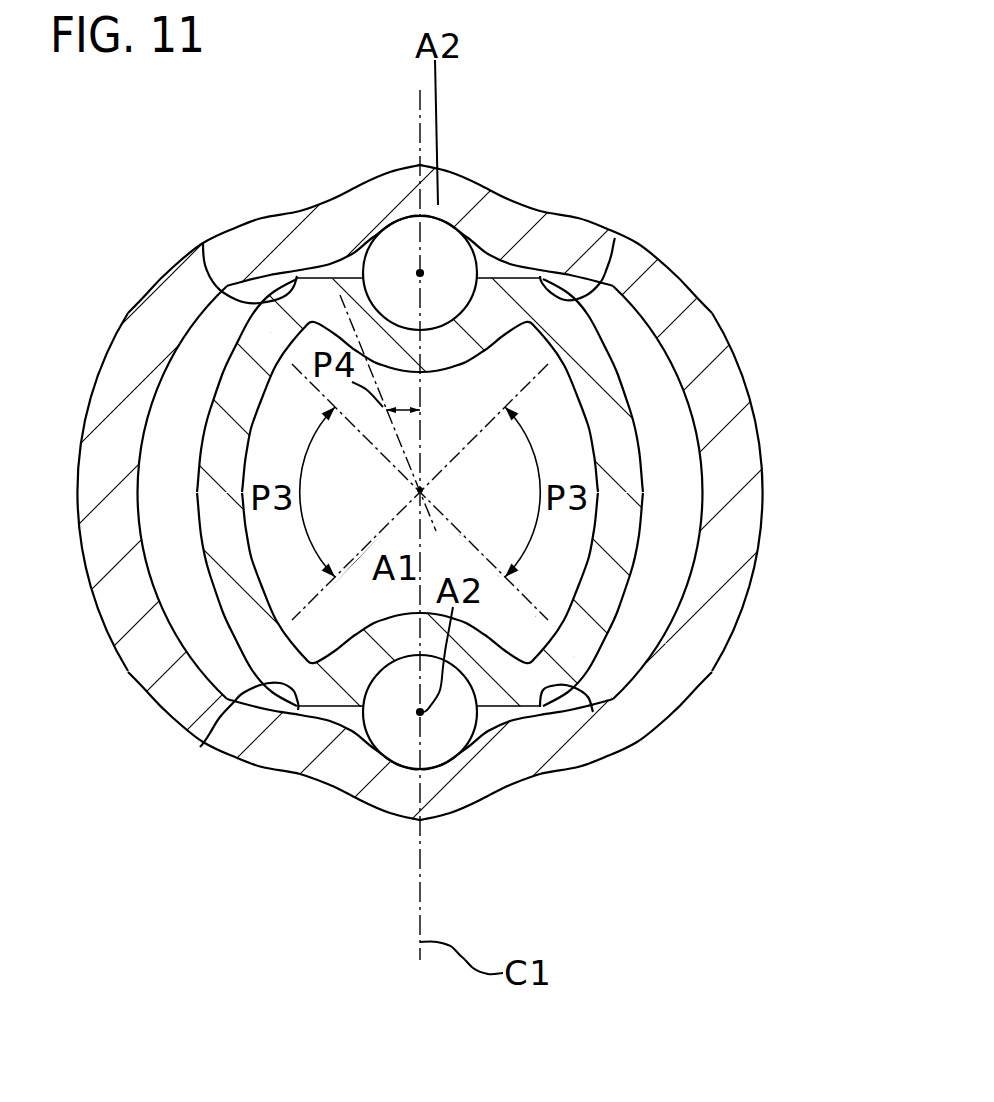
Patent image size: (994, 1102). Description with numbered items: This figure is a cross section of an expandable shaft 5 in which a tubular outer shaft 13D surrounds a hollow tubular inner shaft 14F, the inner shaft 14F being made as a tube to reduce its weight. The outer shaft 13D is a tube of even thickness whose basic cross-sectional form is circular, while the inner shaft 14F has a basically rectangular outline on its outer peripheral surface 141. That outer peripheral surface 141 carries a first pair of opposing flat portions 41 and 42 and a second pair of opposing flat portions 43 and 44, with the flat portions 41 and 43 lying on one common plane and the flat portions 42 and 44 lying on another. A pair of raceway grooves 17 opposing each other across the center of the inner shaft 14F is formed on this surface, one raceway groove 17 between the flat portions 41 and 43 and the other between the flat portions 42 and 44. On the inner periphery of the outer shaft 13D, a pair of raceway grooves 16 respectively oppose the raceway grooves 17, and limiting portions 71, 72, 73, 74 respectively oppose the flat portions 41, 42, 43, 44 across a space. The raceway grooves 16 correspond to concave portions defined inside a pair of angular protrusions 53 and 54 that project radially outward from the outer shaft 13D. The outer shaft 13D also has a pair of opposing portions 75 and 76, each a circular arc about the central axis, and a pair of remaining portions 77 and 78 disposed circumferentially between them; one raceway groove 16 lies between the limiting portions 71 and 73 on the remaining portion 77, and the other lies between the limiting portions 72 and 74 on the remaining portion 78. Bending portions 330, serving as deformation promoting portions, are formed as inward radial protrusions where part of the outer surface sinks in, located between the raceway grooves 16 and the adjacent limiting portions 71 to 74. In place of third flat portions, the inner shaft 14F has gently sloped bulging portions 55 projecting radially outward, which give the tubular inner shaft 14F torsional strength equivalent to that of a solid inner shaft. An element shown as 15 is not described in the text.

The vibration isolating bushing 5 is at (690, 132).
The outer shaft 13D is at (725, 321).
The inner shaft 14F is at (648, 440).
The elastic body 15 is at (387, 257).
The raceway grooves 16 is at (403, 229).
The raceway grooves 17 is at (433, 327).
The flat portion 41 is at (280, 244).
The flat portion 42 is at (250, 767).
The flat portion 43 is at (538, 276).
The flat portion 44 is at (555, 752).
The angular protrusion 53 is at (445, 197).
The angular protrusion 54 is at (460, 812).
The bulging portions 55 is at (220, 540).
The limiting portion 71 is at (203, 240).
The limiting portion 72 is at (203, 745).
The limiting portion 73 is at (602, 281).
The limiting portion 74 is at (593, 710).
The opposing portion 75 is at (108, 404).
The opposing portion 76 is at (726, 568).
The remaining portion 77 is at (407, 183).
The remaining portion 78 is at (377, 803).
The outer peripheral surface 141 is at (600, 645).
The bending portions 330 is at (330, 237).